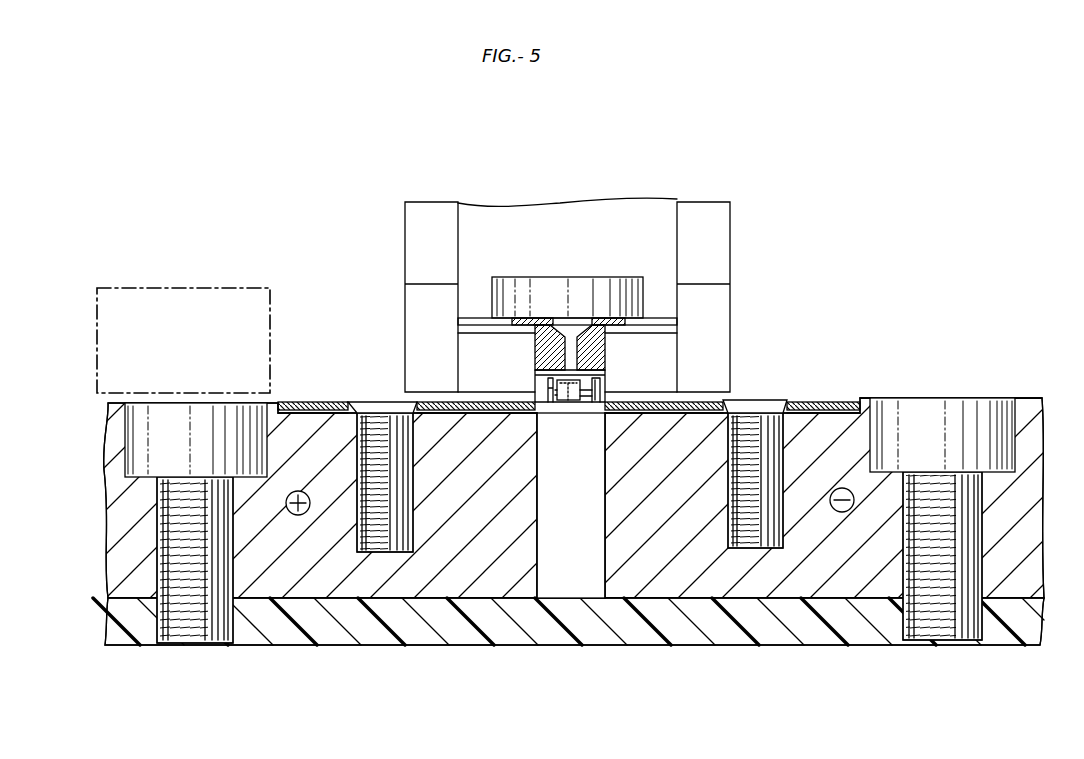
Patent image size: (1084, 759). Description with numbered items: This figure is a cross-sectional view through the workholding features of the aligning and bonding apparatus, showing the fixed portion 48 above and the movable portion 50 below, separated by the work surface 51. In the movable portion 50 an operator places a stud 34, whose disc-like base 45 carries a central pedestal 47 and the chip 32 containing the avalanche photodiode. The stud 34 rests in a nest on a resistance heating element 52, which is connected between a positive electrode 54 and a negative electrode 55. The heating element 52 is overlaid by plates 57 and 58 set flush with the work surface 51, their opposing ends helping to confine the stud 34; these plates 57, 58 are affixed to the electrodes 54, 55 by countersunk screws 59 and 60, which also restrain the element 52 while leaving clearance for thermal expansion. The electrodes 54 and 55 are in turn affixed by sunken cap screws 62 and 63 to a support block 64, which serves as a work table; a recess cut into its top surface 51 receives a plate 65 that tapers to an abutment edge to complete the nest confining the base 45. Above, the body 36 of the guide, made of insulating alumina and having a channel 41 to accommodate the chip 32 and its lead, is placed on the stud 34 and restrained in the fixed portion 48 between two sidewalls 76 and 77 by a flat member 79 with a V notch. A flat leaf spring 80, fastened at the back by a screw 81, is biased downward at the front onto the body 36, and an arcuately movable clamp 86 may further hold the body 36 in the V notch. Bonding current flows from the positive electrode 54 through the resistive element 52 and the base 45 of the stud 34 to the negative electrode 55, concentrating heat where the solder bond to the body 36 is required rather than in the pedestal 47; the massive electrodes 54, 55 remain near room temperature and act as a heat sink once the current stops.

The chip 32 is at (582, 378).
The stud 34 is at (594, 413).
The body 36 is at (534, 346).
The channel 41 is at (598, 387).
The base 45 is at (562, 413).
The pedestal 47 is at (550, 390).
The fixed portion 48 is at (611, 334).
The movable portion 50 is at (971, 483).
The work surface 51 is at (868, 398).
The resistance heating element 52 is at (525, 415).
The positive electrode 54 is at (117, 510).
The negative electrode 55 is at (1020, 515).
The plate 57 is at (322, 402).
The plate 58 is at (820, 400).
The countersunk screw 59 is at (377, 402).
The countersunk screw 60 is at (755, 400).
The sunken cap screw 62 is at (140, 430).
The sunken cap screw 63 is at (993, 432).
The support block 64 is at (118, 618).
The plate 65 is at (585, 527).
The sidewall 76 is at (423, 235).
The sidewall 77 is at (698, 276).
The flat member 79 is at (460, 355).
The flat leaf spring 80 is at (538, 317).
The screw 81 is at (585, 292).
The clamp 86 is at (177, 321).